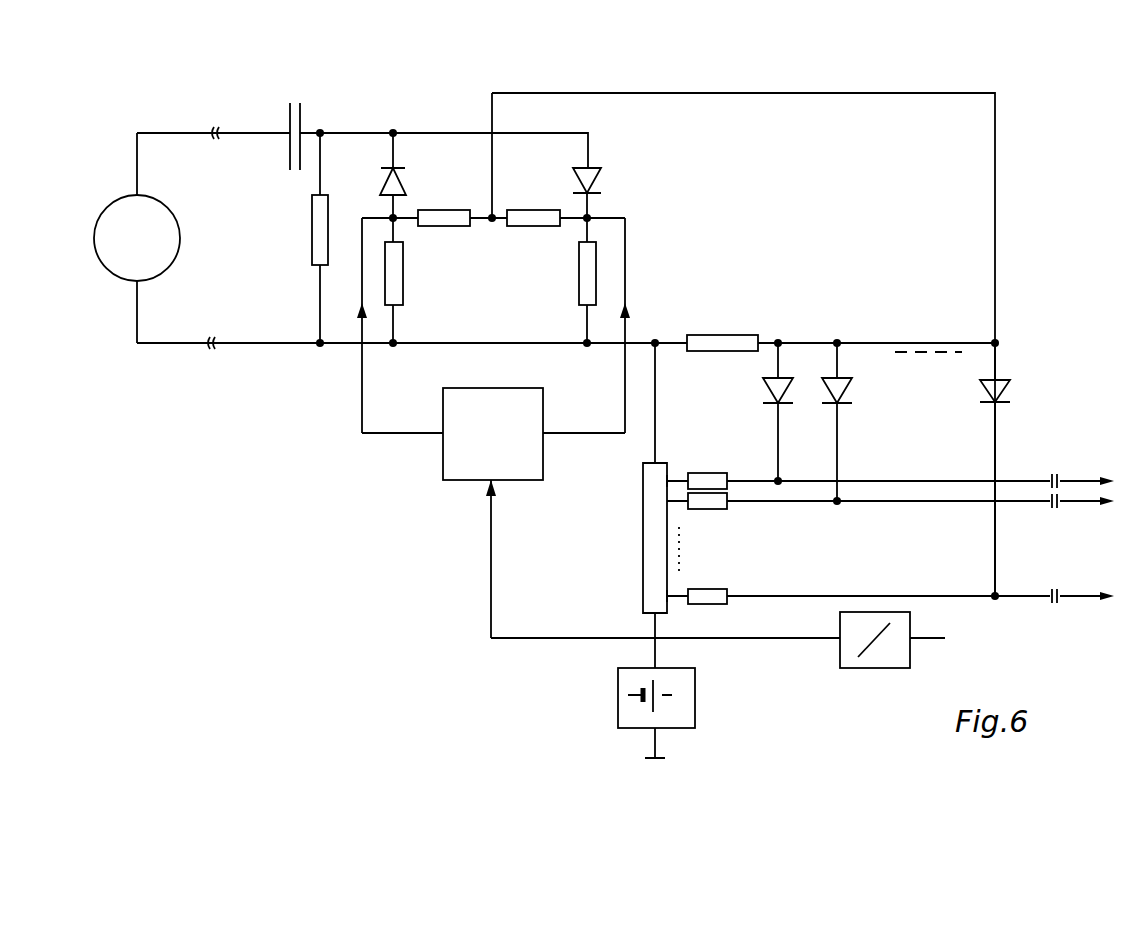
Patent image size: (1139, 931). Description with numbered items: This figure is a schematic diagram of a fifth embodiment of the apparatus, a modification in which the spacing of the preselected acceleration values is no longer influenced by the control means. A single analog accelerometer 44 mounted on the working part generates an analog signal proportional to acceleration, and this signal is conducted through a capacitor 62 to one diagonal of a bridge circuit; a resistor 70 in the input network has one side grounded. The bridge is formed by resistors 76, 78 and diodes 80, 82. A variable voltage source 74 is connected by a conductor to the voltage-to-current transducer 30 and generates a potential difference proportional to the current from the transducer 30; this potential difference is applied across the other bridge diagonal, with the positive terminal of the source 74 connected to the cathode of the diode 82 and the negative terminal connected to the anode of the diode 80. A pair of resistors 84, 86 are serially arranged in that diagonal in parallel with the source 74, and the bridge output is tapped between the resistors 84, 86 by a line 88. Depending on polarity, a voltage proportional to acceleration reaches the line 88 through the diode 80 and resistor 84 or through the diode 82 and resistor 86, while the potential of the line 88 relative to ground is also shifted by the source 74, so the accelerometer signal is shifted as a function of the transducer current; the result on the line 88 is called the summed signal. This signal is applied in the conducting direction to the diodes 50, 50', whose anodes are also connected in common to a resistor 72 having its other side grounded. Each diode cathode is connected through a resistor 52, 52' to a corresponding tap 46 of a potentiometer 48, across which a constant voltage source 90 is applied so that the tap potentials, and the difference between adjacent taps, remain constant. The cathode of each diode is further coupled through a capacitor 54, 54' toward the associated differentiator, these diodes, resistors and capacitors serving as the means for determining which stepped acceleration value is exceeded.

The voltage-to-current transducer 30 is at (878, 612).
The analog accelerometer 44 is at (168, 238).
The tap 46 is at (672, 480).
The potentiometer 48 is at (655, 487).
The diode 50 is at (763, 412).
The diode 50' is at (868, 422).
The resistor 52 is at (710, 441).
The resistor 52' is at (725, 518).
The capacitor 54 is at (1080, 458).
The capacitor 54' is at (1087, 523).
The capacitor 62 is at (293, 124).
The resistor 70 is at (318, 232).
The resistor 72 is at (700, 335).
The variable voltage source 74 is at (515, 485).
The resistor 76 is at (396, 270).
The resistor 78 is at (590, 278).
The diode 80 is at (399, 192).
The diode 82 is at (598, 190).
The resistor 84 is at (445, 210).
The resistor 86 is at (525, 210).
The line 88 is at (845, 93).
The constant voltage source 90 is at (683, 695).